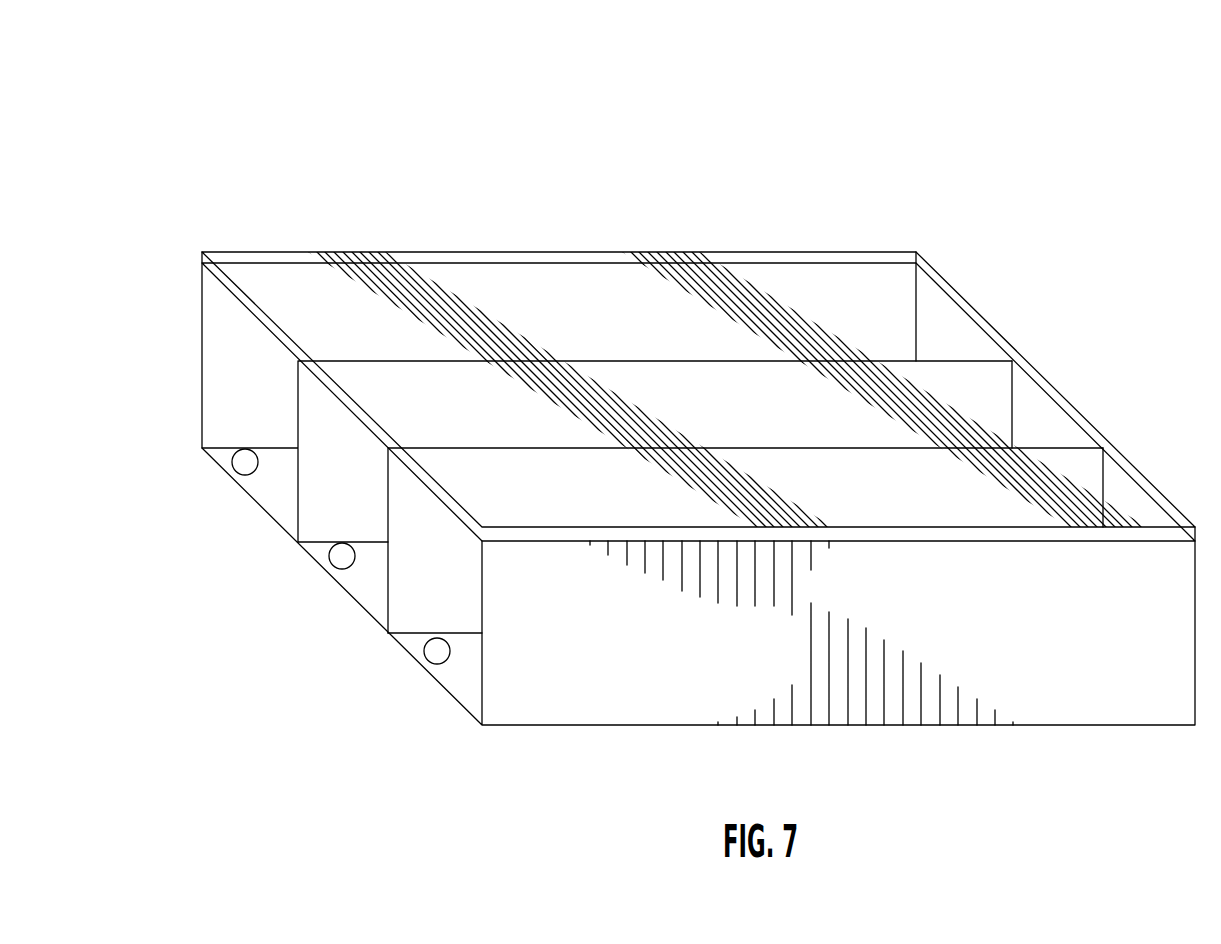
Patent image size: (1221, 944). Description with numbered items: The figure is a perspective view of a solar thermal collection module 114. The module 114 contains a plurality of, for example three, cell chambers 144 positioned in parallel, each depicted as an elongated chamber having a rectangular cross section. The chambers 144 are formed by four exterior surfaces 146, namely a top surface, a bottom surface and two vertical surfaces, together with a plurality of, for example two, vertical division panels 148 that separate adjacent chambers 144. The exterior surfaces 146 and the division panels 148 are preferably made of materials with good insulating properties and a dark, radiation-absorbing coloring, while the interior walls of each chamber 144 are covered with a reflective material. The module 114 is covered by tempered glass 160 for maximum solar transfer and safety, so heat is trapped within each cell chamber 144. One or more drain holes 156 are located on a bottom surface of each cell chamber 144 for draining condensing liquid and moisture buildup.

The solar thermal collection module 114 is at (466, 122).
The cell chamber 144 is at (410, 508).
The exterior surface 146 is at (200, 295).
The vertical division panel 148 is at (306, 501).
The drain hole 156 is at (437, 651).
The tempered glass 160 is at (648, 252).